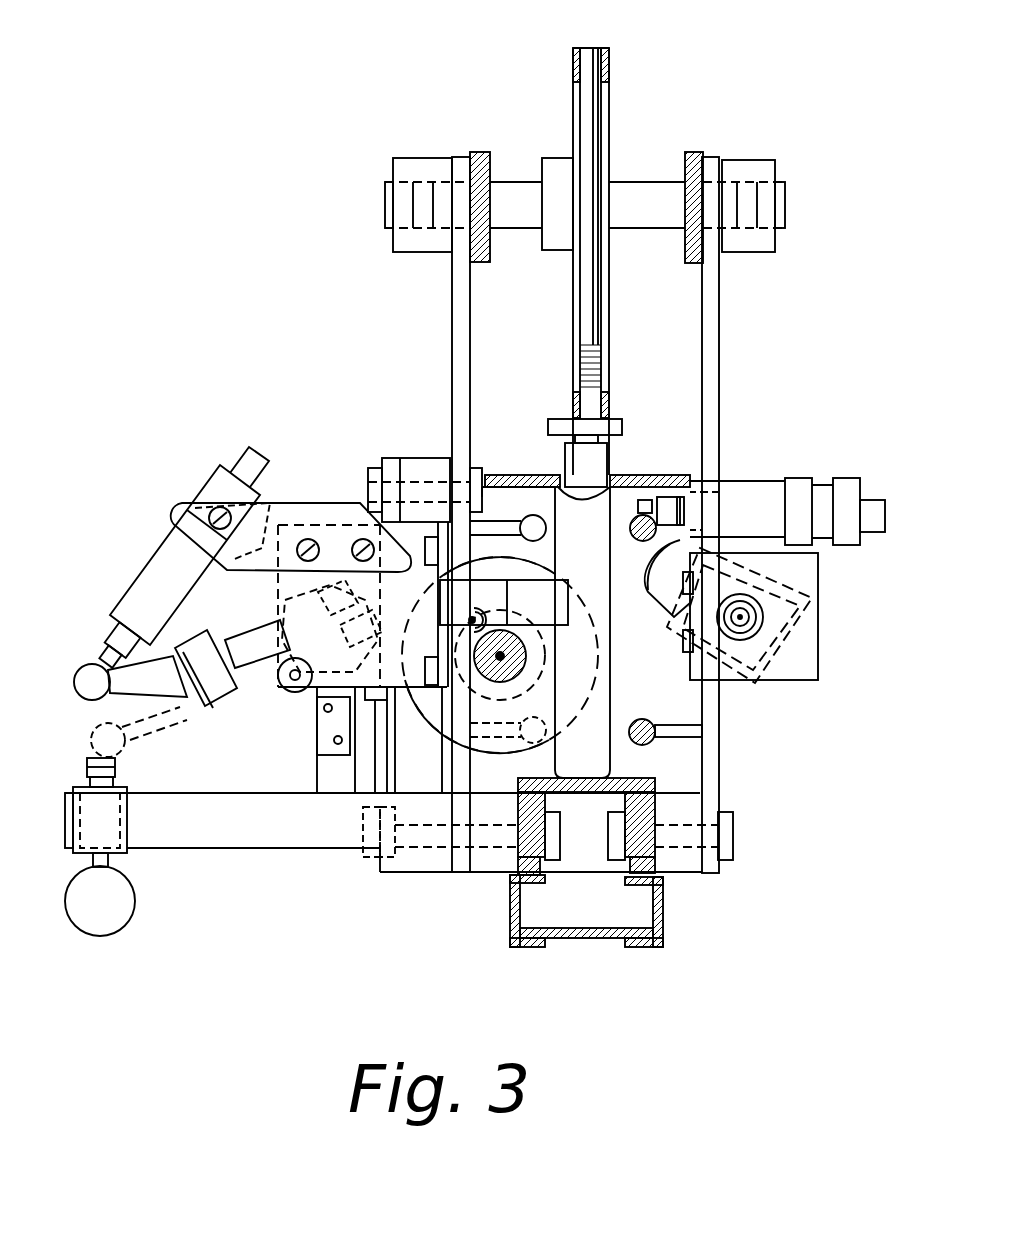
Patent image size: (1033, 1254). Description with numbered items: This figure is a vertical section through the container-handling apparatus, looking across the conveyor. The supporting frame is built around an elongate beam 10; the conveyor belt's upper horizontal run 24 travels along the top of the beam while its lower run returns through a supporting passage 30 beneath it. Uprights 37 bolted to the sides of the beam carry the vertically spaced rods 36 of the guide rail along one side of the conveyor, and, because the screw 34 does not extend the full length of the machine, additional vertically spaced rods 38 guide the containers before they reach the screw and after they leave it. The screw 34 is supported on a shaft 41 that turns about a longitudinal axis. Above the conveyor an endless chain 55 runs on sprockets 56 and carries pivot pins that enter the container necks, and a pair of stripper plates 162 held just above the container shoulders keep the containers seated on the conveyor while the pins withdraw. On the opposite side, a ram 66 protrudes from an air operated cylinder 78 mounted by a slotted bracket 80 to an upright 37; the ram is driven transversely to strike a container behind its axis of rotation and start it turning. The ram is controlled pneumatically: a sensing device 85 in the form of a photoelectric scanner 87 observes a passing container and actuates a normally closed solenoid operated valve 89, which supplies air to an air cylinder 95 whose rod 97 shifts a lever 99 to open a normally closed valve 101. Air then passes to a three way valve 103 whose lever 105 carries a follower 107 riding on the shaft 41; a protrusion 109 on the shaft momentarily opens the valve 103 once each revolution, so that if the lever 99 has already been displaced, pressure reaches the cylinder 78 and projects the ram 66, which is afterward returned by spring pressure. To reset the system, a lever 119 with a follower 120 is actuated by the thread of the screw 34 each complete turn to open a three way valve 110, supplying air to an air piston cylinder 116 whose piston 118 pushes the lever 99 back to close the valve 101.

The elongate beam 10 is at (677, 885).
The upper horizontal run 24 is at (622, 790).
The supporting passage 30 is at (508, 920).
The screw 34 is at (442, 742).
The vertically spaced rods 36 is at (638, 542).
The upright 37 is at (470, 345).
The additional vertically spaced rods 38 is at (526, 519).
The screw shaft 41 is at (503, 682).
The endless chain 55 is at (577, 50).
The sprockets 56 is at (593, 100).
The ram 66 is at (645, 497).
The air operated cylinder 78 is at (747, 487).
The bracket 80 is at (695, 495).
The sensing device 85 is at (812, 590).
The photoelectric scanner 87 is at (665, 595).
The three way solenoid operated valve 89 is at (135, 913).
The air cylinder 95 is at (122, 830).
The rod 97 is at (86, 765).
The lever 99 is at (78, 697).
The normally closed valve 101 is at (228, 705).
The three way valve 103 is at (290, 600).
The lever 105 is at (440, 722).
The follower 107 is at (485, 613).
The protrusion 109 is at (527, 660).
The three way valve 110 is at (317, 752).
The air piston 116 is at (165, 550).
The piston 118 is at (95, 655).
The lever 119 is at (322, 709).
The follower 120 is at (332, 724).
The stripper plates 162 is at (500, 474).